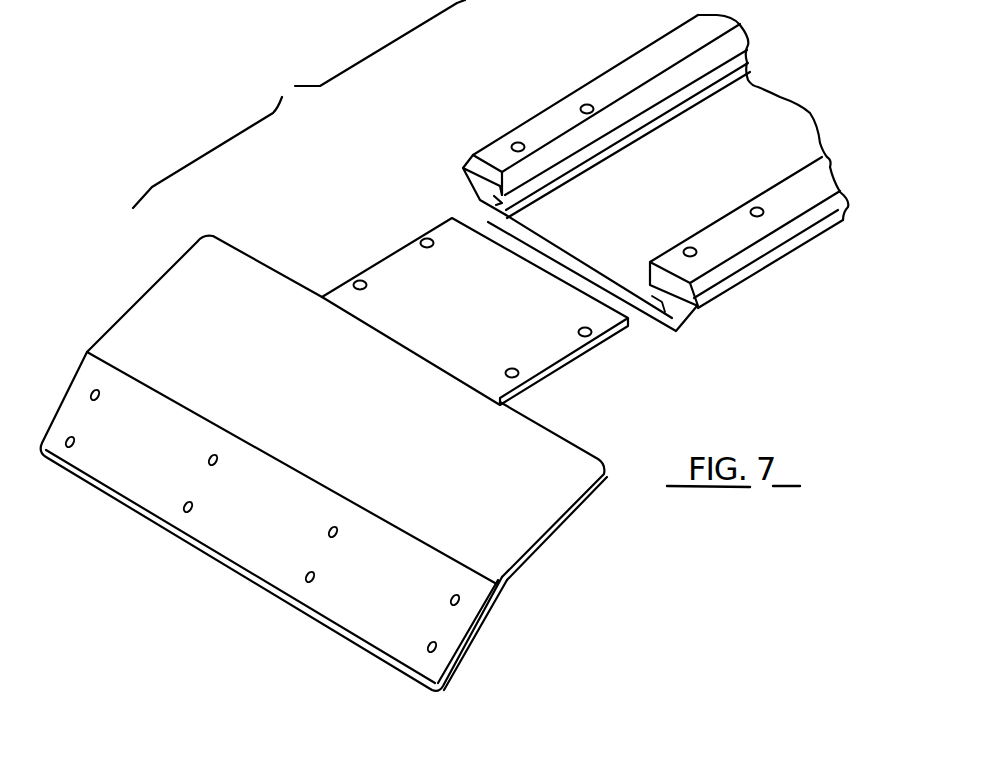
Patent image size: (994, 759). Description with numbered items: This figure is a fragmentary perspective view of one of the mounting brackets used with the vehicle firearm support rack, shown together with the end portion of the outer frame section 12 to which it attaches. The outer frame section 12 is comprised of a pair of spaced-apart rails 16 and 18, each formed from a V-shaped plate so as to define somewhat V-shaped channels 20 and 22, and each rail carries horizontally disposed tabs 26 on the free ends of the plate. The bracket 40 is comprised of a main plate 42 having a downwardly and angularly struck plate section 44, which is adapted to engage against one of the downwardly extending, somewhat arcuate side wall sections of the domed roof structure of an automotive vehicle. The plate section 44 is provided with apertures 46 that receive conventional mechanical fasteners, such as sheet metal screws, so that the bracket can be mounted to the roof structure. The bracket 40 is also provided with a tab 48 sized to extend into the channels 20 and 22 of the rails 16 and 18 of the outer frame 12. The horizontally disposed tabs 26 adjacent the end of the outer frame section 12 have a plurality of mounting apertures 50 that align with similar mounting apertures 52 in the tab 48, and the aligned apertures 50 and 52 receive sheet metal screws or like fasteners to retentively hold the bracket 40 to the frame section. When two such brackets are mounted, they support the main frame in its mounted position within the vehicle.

The outer frame section 12 is at (641, 39).
The rail 16 is at (563, 100).
The rail 18 is at (820, 233).
The V-shaped channel 20 is at (470, 167).
The V-shaped channel 22 is at (693, 313).
The horizontally disposed tab 26 is at (657, 62).
The bracket 40 is at (117, 290).
The main plate 42 is at (215, 257).
The plate section 44 is at (63, 417).
The apertures 46 is at (189, 513).
The tab 48 is at (518, 280).
The mounting apertures 50 is at (753, 210).
The mounting apertures 52 is at (588, 338).